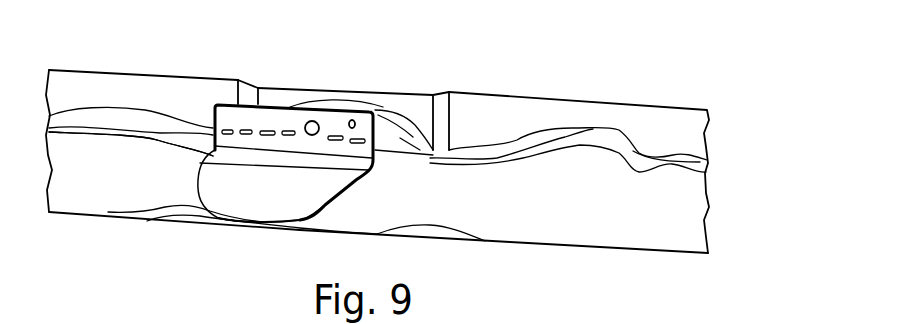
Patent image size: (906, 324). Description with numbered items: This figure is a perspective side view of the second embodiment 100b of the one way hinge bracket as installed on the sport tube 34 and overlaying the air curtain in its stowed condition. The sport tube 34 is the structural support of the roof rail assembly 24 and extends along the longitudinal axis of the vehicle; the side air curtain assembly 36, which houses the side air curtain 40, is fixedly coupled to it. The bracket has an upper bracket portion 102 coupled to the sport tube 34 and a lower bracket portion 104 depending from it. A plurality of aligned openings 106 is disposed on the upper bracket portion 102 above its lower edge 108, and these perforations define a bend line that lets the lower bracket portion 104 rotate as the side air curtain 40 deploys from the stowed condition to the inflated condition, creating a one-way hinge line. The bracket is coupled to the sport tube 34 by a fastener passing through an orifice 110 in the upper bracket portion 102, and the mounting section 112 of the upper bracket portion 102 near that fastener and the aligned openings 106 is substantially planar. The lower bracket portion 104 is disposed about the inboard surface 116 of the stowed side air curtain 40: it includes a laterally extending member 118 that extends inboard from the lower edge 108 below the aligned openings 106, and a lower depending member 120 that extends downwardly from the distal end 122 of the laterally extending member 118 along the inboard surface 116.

The roof rail assembly 24 is at (639, 120).
The sport tube 34 is at (123, 85).
The side air curtain assembly 36 is at (666, 197).
The side air curtain 40 is at (510, 222).
The second embodiment of the one way hinge bracket 100b is at (220, 197).
The upper bracket portion 102 is at (258, 118).
The lower bracket portion 104 is at (272, 200).
The plurality of aligned openings 106 is at (373, 111).
The lower edge of the upper bracket portion 108 is at (398, 168).
The orifice 110 is at (320, 122).
The mounting section of the upper bracket portion 112 is at (213, 117).
The inboard surface of the side air curtain 116 is at (165, 163).
The laterally extending member 118 is at (335, 167).
The lower depending member 120 is at (312, 200).
The distal end of the laterally extending member 122 is at (200, 167).